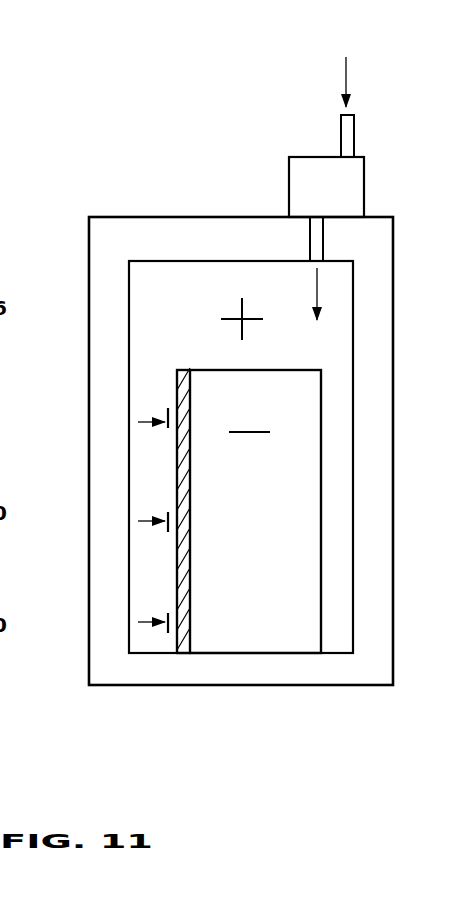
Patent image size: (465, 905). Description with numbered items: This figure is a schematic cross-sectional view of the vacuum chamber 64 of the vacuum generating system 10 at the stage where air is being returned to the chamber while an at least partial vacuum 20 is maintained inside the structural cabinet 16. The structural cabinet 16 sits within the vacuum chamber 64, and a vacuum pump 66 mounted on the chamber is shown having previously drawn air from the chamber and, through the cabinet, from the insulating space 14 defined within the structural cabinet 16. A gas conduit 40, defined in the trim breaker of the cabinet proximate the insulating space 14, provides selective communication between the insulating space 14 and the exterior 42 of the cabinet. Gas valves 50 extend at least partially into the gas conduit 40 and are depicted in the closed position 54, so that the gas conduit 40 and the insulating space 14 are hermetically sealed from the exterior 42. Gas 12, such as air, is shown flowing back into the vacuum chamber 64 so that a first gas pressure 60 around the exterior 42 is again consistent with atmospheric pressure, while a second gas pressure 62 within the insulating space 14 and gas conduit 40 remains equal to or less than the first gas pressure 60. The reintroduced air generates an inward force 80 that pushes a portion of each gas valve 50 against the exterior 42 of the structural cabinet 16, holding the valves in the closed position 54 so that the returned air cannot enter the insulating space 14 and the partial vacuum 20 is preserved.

The vacuum generating system 10 is at (117, 186).
The gas 12 is at (346, 85).
The insulating space 14 is at (232, 630).
The structural cabinet 16 is at (324, 426).
The at least partial vacuum 20 is at (292, 540).
The gas conduit 40 is at (190, 523).
The exterior 42 is at (350, 357).
The gas valve 50 is at (163, 437).
The closed position 54 is at (161, 537).
The first gas pressure 60 is at (227, 295).
The second gas pressure 62 is at (272, 596).
The vacuum chamber 64 is at (215, 215).
The vacuum pump 66 is at (298, 190).
The inward force 80 is at (161, 421).